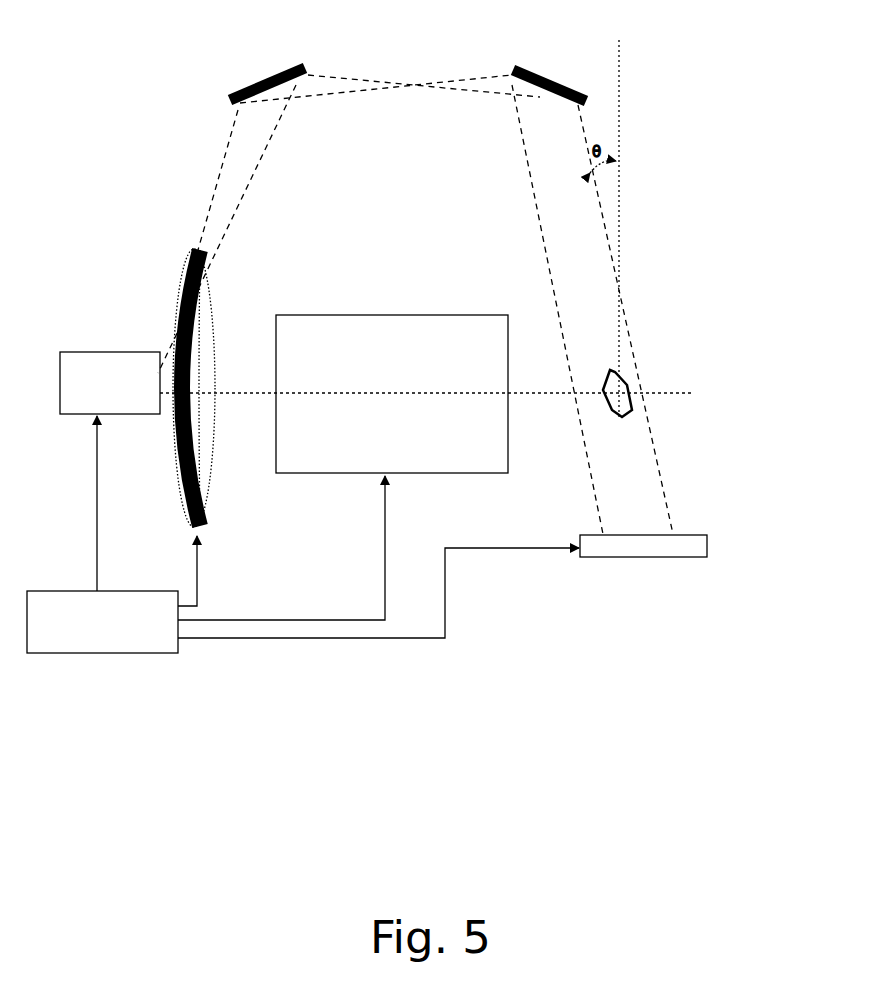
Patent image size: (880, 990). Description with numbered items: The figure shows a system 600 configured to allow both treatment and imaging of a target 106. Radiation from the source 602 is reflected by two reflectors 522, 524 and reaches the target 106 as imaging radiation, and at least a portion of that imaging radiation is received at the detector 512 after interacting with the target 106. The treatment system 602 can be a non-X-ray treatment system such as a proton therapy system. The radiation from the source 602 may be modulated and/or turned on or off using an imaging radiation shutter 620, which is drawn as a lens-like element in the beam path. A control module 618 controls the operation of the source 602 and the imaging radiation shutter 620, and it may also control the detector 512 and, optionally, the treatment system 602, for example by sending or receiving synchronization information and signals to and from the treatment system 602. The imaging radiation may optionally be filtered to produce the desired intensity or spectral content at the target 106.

The reflector 522 is at (262, 74).
The reflector 524 is at (567, 83).
The system 600 is at (719, 122).
The imaging radiation shutter 620 is at (178, 511).
The source / treatment system 602 is at (284, 394).
The target 106 is at (630, 378).
The detector 512 is at (627, 556).
The control module 618 is at (303, 534).